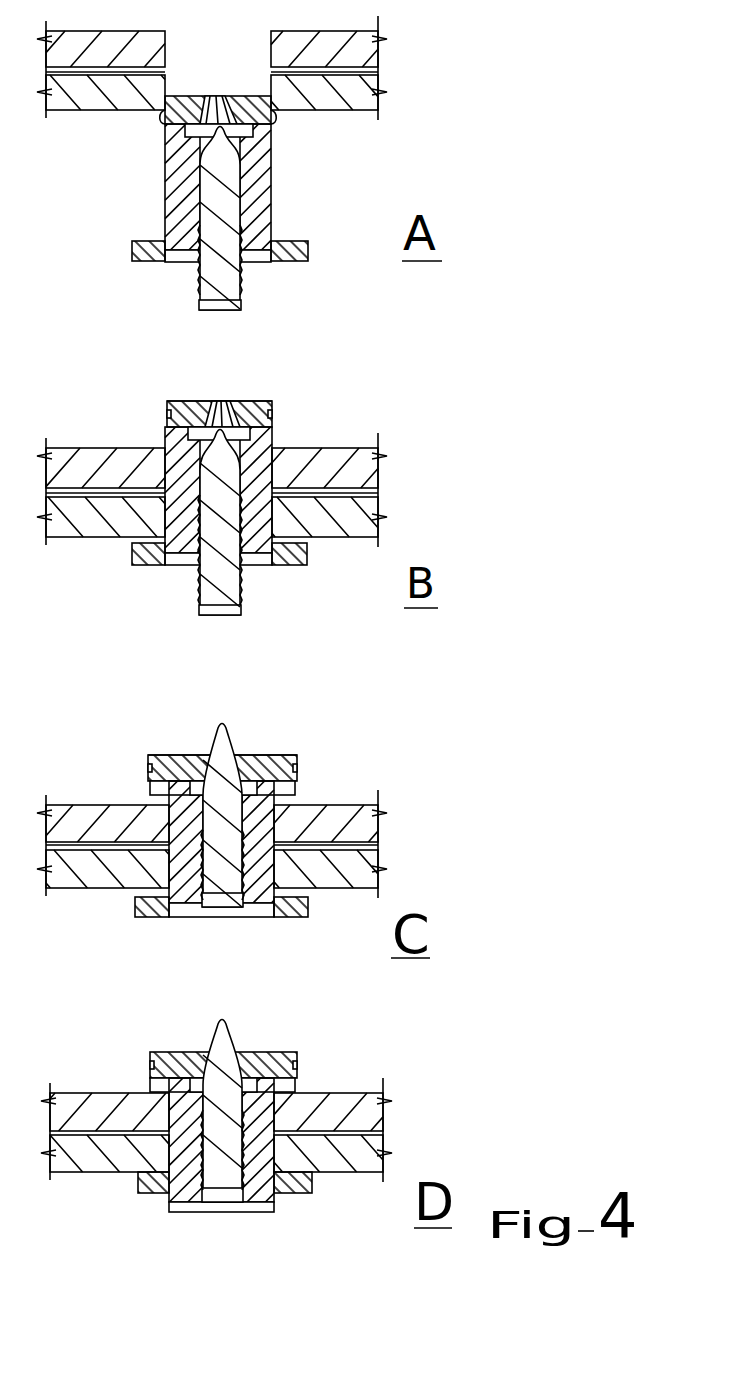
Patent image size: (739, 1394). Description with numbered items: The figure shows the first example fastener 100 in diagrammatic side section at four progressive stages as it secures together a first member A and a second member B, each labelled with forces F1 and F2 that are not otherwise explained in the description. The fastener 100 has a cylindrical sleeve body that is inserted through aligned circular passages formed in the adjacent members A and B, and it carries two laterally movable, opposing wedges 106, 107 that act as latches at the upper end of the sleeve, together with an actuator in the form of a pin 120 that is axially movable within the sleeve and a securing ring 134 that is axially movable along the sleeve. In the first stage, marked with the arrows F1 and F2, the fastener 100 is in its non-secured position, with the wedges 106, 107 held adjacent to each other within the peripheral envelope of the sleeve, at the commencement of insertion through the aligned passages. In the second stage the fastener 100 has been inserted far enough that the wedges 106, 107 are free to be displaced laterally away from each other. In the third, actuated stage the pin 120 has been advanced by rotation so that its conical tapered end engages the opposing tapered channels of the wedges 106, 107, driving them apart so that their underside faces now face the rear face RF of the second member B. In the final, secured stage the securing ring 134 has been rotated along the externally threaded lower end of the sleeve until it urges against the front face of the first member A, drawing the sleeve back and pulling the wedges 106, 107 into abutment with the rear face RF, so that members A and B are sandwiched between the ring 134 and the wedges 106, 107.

In FIG. 4A, the first example fastener 100 is at (286, 183).
In FIG. 4B, the wedge 106 is at (167, 402).
In FIG. 4C, the wedge 106 is at (162, 757).
In FIG. 4B, the wedge 107 is at (262, 401).
In FIG. 4C, the wedge 107 is at (290, 757).
In FIG. 4B, the pin 120 is at (194, 579).
In FIG. 4D, the pin 120 is at (239, 1031).
In FIG. 4D, the securing ring 134 is at (290, 1185).
In FIG. 4A, the first member A is at (378, 104).
In FIG. 4B, the first member A is at (378, 506).
In FIG. 4C, the first member A is at (378, 852).
In FIG. 4D, the first member A is at (383, 1165).
In FIG. 4A, the second member B is at (362, 58).
In FIG. 4B, the second member B is at (325, 467).
In FIG. 4C, the second member B is at (330, 820).
In FIG. 4D, the second member B is at (333, 1105).
In FIG. 4A, the force F1 is at (173, 83).
In FIG. 4A, the force F2 is at (264, 57).
In FIG. 4C, the rear face RF is at (96, 804).
In FIG. 4D, the rear face RF is at (98, 1085).